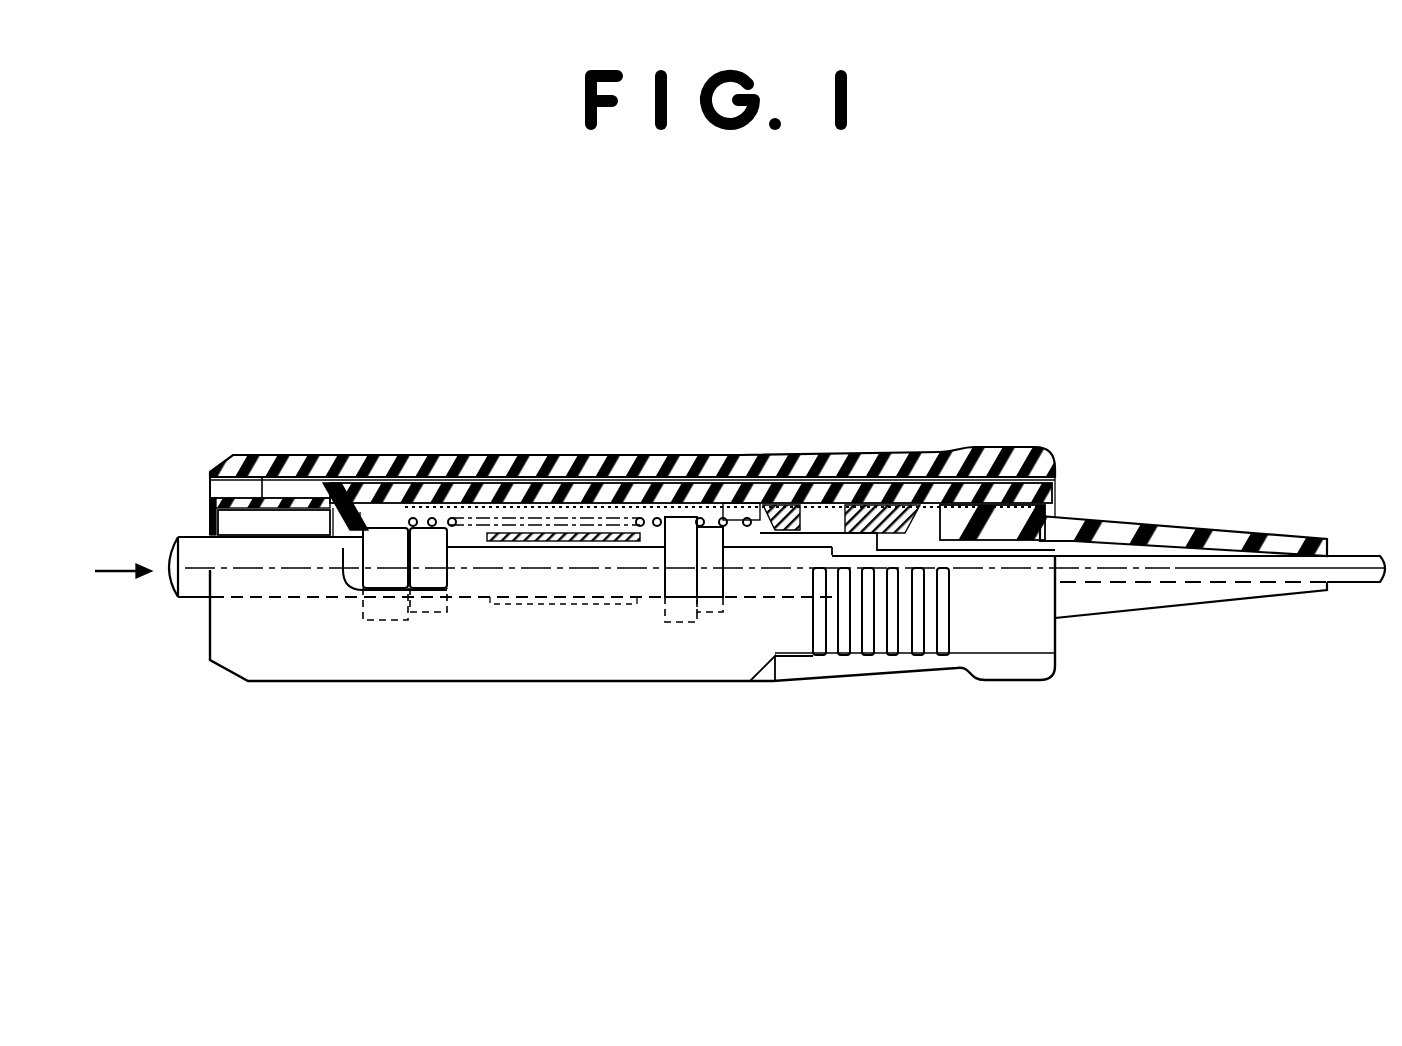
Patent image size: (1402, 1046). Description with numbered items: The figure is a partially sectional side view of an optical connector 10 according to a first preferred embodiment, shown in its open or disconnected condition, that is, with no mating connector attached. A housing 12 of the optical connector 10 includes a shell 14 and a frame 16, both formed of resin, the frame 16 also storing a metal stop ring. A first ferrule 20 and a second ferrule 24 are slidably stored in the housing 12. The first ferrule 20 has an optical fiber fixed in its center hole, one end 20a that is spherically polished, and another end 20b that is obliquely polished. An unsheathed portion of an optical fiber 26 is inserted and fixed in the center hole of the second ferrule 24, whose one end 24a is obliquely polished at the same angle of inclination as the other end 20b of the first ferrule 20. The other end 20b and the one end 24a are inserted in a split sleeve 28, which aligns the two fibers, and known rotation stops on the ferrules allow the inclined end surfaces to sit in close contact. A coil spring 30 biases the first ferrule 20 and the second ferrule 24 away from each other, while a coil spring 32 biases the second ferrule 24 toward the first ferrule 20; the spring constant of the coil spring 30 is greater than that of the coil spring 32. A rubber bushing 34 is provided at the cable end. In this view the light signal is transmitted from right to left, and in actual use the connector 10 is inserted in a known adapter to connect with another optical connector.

The optical connector 10 is at (722, 595).
The housing 12 is at (844, 452).
The shell 14 is at (270, 470).
The frame 16 is at (375, 500).
The first ferrule 20 is at (310, 560).
The one end of the first ferrule 20a is at (165, 587).
The other end of the first ferrule 20b is at (583, 552).
The second ferrule 24 is at (683, 563).
The one end of the second ferrule 24a is at (587, 553).
The optical fiber 26 is at (1352, 588).
The split sleeve 28 is at (562, 500).
The coil spring 30 is at (507, 490).
The coil spring 32 is at (731, 500).
The rubber bushing 34 is at (1178, 530).